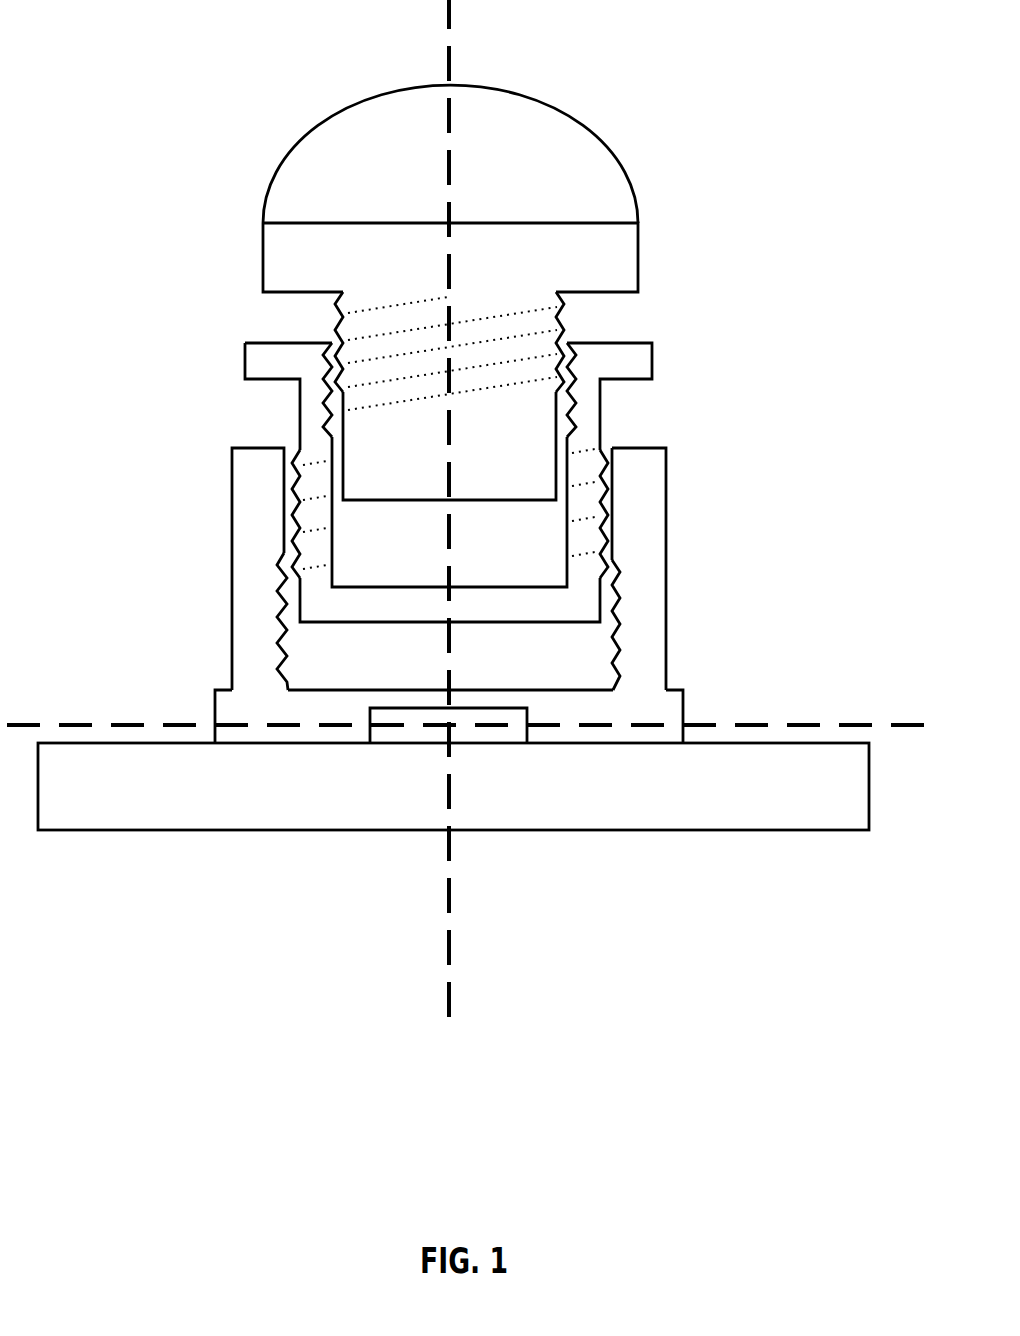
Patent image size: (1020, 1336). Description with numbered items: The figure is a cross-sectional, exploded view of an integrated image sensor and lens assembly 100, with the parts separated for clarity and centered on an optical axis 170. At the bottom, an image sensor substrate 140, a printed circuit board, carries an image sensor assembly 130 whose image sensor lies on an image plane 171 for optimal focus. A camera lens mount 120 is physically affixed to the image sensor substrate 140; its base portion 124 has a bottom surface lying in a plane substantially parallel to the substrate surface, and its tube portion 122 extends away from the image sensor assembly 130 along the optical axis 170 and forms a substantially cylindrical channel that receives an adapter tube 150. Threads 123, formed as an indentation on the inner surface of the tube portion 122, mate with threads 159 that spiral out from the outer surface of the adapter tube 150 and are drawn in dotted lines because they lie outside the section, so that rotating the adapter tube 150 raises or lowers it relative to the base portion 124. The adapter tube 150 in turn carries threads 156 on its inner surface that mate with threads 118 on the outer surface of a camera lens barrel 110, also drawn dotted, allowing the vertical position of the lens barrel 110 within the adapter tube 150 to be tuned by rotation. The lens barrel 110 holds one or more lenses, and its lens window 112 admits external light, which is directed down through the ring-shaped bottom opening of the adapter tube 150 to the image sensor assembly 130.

The integrated image sensor and lens assembly 100 is at (82, 26).
The camera lens barrel 110 is at (441, 287).
The lens window 112 is at (530, 117).
The threads 118 is at (567, 339).
The camera lens mount 120 is at (443, 585).
The tube portion 122 is at (231, 479).
The threads 123 is at (624, 569).
The base portion 124 is at (687, 689).
The image sensor assembly 130 is at (531, 740).
The image sensor substrate 140 is at (263, 833).
The adapter tube 150 is at (432, 473).
The threads 156 is at (582, 395).
The threads 159 is at (614, 461).
The optical axis 170 is at (542, 1047).
The image plane 171 is at (749, 729).